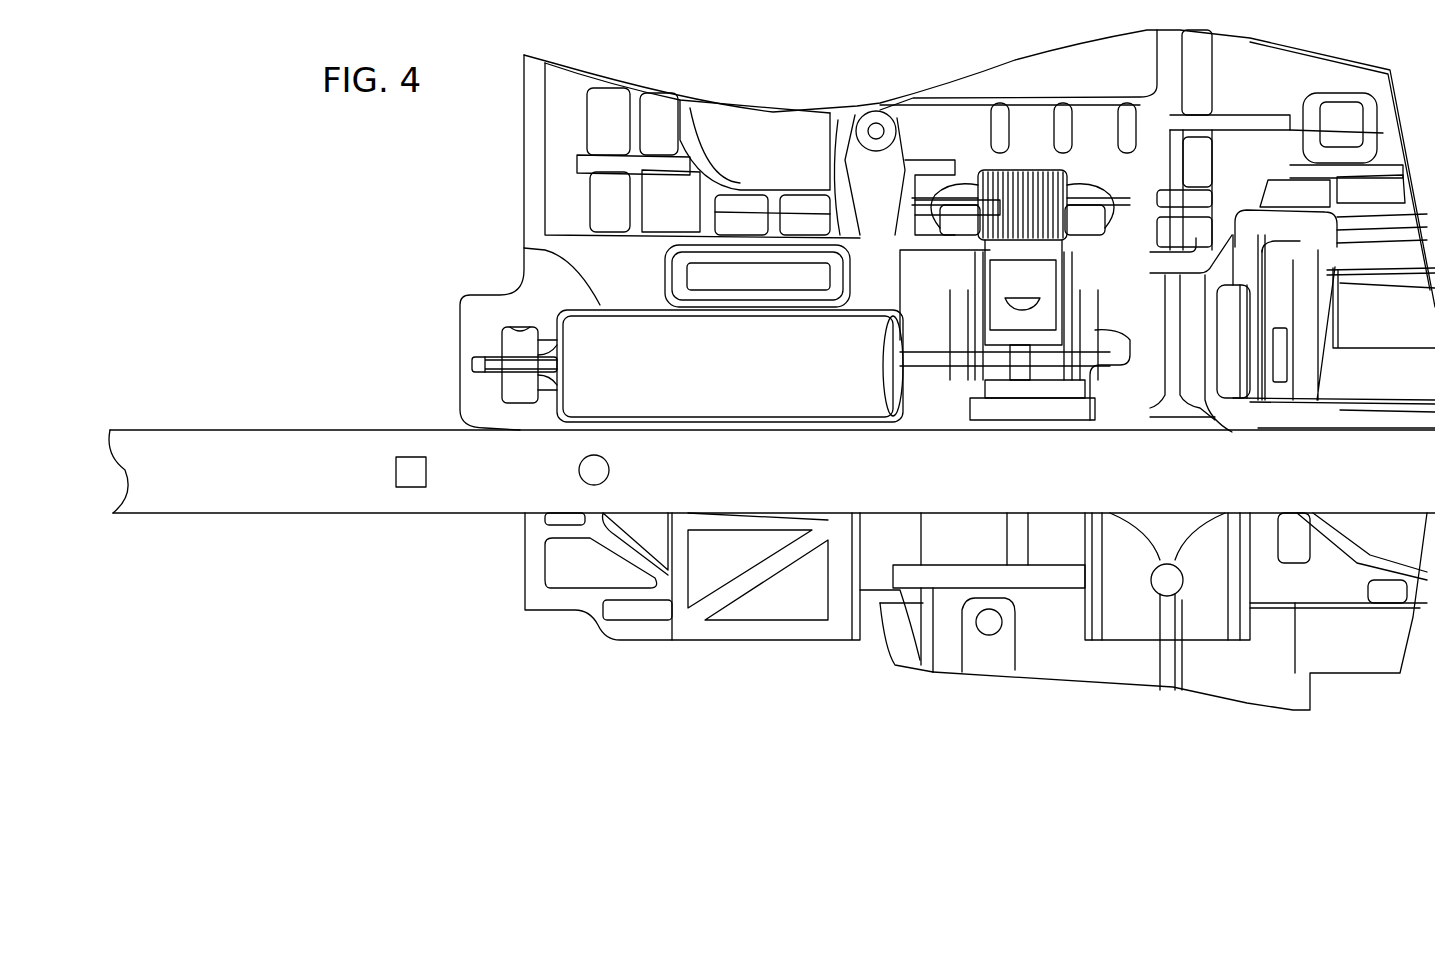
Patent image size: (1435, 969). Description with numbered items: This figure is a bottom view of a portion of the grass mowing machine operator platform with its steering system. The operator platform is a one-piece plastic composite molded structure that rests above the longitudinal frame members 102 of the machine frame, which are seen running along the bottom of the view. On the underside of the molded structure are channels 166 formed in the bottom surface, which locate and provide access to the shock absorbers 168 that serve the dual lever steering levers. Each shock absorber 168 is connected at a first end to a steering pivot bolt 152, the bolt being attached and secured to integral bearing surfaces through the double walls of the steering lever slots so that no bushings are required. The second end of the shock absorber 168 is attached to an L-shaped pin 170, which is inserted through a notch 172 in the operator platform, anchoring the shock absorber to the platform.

The longitudinal frame members 102 is at (295, 468).
The steering pivot bolts 152 is at (1018, 350).
The channels 166 is at (524, 249).
The shock absorbers 168 is at (632, 362).
The L-shaped pin 170 is at (515, 389).
The notch 172 is at (510, 328).